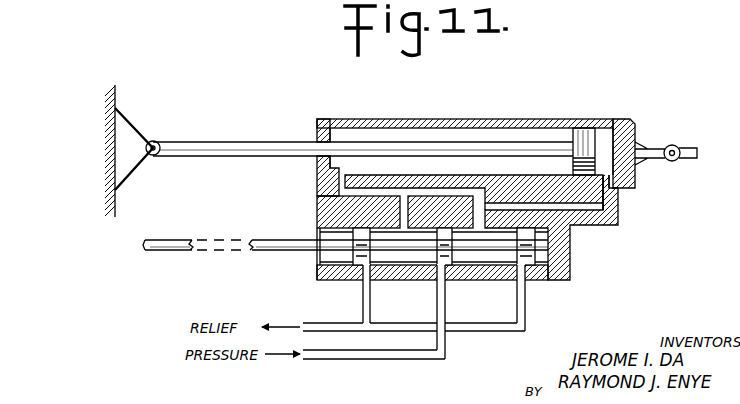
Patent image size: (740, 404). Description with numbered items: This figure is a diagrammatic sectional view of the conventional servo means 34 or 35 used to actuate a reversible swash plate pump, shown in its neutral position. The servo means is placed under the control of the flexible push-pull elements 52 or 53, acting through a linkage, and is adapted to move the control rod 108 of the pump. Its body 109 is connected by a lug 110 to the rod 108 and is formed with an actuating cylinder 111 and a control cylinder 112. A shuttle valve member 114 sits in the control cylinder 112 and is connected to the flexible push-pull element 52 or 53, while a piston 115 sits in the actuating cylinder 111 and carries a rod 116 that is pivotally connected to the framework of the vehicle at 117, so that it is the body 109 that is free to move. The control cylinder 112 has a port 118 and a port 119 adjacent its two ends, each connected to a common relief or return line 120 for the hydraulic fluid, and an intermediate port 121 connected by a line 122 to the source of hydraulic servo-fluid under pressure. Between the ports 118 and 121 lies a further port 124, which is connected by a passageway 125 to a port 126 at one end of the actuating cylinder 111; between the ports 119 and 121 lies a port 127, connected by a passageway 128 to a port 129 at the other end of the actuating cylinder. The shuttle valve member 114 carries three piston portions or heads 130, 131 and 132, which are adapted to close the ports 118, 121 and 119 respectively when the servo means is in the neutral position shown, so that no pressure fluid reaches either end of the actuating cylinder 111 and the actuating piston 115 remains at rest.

The servo means 34 is at (401, 111).
The servo means 35 is at (426, 108).
The flexible push-pull element 52 is at (177, 251).
The flexible push-pull element 53 is at (257, 252).
The control rod 108 is at (688, 146).
The body 109 is at (314, 178).
The lug 110 is at (651, 148).
The actuating cylinder 111 is at (360, 131).
The control cylinder 112 is at (388, 258).
The shuttle valve member 114 is at (500, 281).
The piston 115 is at (580, 135).
The rod 116 is at (223, 146).
The pivotal connection to framework 117 is at (162, 138).
The port 118 is at (358, 270).
The port 119 is at (524, 280).
The relief or return line 120 is at (333, 333).
The intermediate port 121 is at (448, 281).
The line 122 is at (400, 362).
The port 124 is at (345, 213).
The passageway 125 is at (575, 212).
The port 126 is at (607, 184).
The port 127 is at (493, 208).
The passageway 128 is at (407, 192).
The port 129 is at (340, 130).
The piston portion or head 130 is at (317, 264).
The piston portion or head 131 is at (440, 233).
The piston portion or head 132 is at (548, 252).